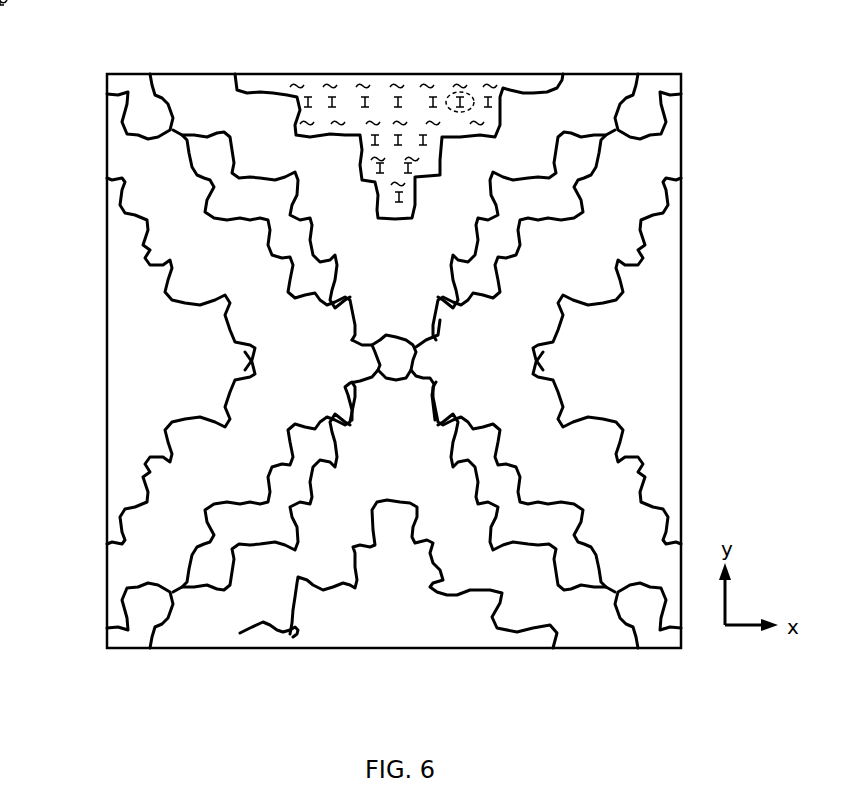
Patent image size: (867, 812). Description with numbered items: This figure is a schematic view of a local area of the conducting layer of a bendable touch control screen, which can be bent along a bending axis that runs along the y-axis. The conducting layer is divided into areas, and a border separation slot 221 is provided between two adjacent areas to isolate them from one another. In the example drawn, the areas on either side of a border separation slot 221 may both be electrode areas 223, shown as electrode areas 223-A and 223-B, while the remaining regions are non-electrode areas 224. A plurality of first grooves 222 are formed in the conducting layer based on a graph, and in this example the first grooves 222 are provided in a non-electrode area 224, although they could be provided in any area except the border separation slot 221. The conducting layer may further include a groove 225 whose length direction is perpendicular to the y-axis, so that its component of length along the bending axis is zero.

The border separation slot 221 is at (288, 95).
The first groove 222 is at (447, 92).
The electrode area 223 is at (394, 371).
The electrode area 223-A is at (357, 215).
The electrode area 223-B is at (266, 316).
The non-electrode area 224 is at (218, 165).
The groove 225 is at (493, 88).